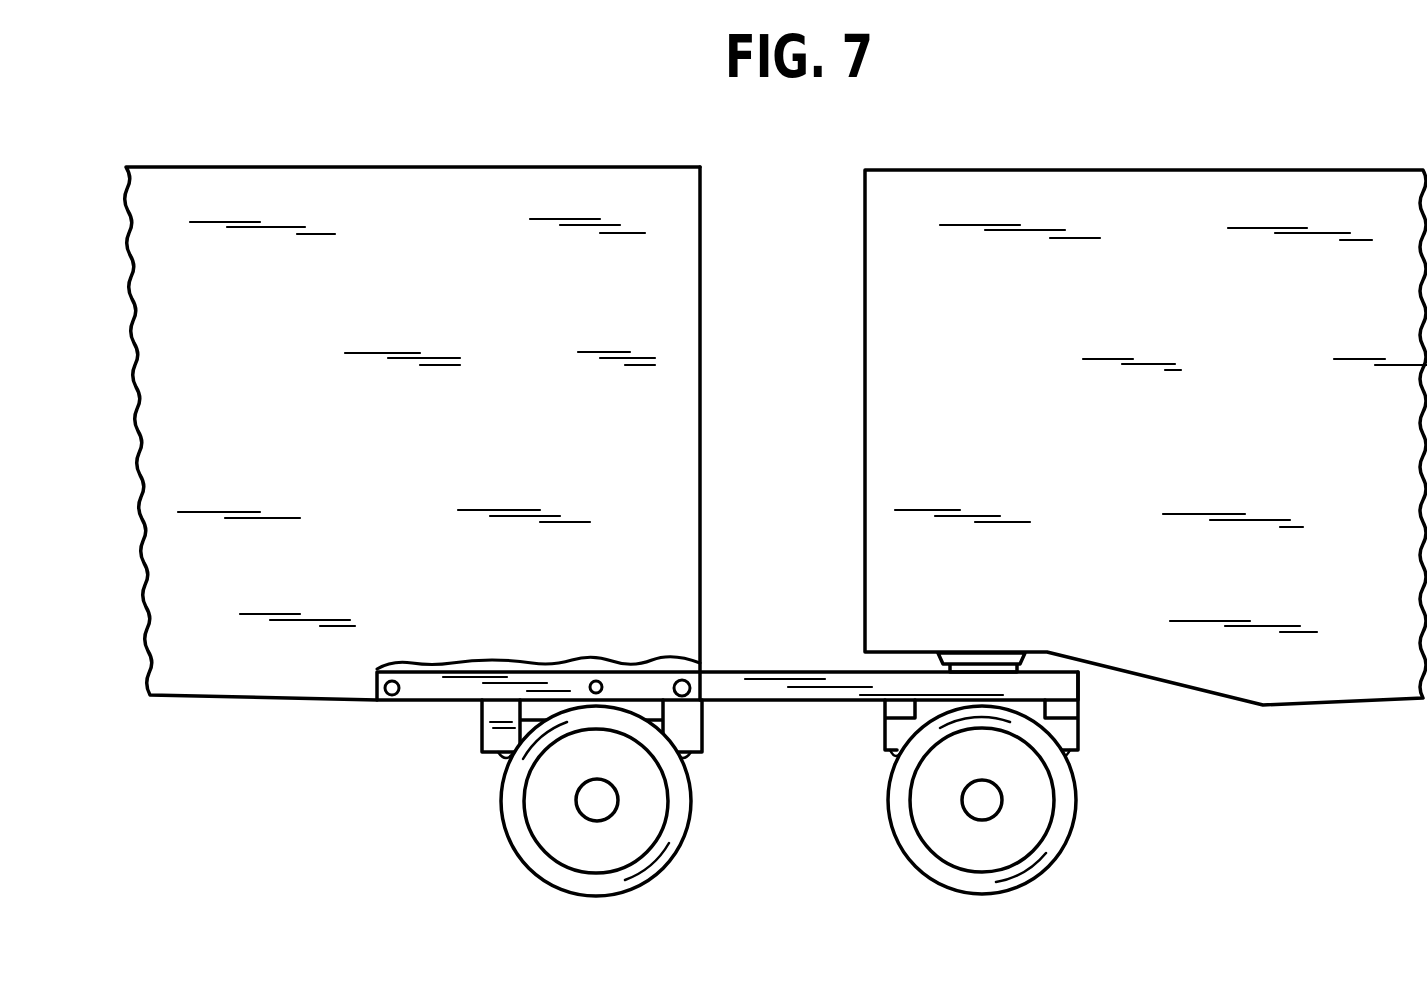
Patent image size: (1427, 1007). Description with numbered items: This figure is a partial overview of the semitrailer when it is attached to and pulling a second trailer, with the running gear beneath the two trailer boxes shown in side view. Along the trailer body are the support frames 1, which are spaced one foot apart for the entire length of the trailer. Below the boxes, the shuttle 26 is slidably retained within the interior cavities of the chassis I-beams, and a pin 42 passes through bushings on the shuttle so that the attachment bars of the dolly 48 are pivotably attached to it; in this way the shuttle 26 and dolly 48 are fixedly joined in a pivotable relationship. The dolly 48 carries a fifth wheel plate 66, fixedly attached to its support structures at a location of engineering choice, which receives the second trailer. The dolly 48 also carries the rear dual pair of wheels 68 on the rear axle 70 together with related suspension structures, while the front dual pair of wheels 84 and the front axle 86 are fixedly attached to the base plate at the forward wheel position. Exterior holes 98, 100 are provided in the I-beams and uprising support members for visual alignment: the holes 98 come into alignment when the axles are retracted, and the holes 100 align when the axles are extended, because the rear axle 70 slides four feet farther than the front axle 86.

The support frames 1 is at (395, 660).
The shuttle 26 is at (482, 741).
The pin 42 is at (686, 696).
The dolly 48 is at (1072, 743).
The fifth wheel plate 66 is at (978, 653).
The rear dual pair of wheels 68 is at (1052, 847).
The rear axle 70 is at (977, 810).
The front dual pair of wheels 84 is at (523, 843).
The front axle 86 is at (592, 805).
The exterior holes 98 is at (388, 695).
The exterior holes 100 is at (596, 681).